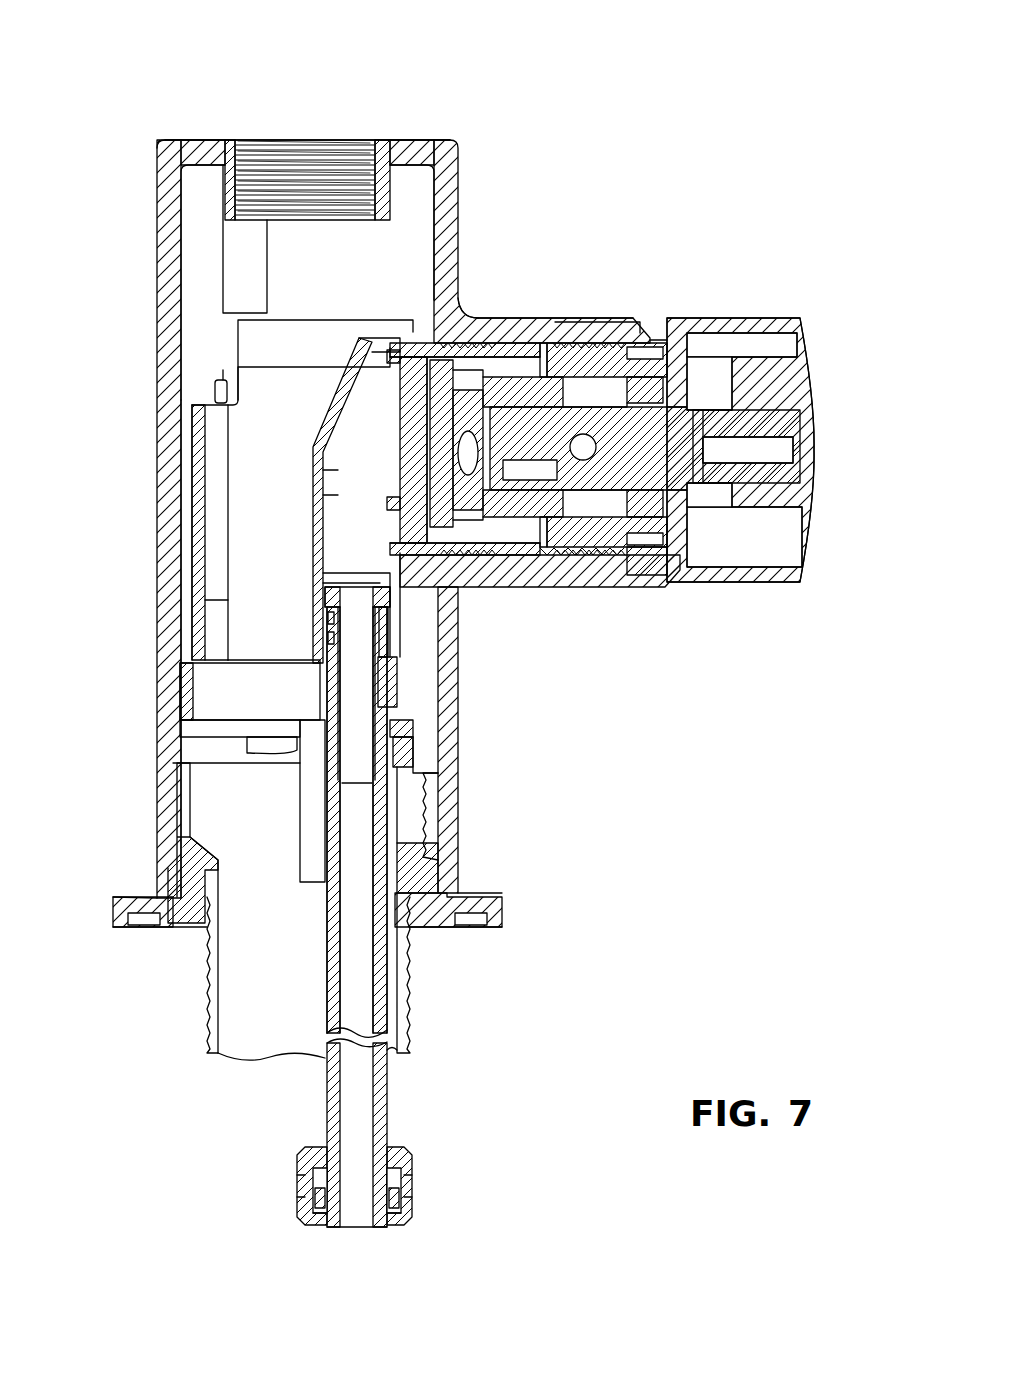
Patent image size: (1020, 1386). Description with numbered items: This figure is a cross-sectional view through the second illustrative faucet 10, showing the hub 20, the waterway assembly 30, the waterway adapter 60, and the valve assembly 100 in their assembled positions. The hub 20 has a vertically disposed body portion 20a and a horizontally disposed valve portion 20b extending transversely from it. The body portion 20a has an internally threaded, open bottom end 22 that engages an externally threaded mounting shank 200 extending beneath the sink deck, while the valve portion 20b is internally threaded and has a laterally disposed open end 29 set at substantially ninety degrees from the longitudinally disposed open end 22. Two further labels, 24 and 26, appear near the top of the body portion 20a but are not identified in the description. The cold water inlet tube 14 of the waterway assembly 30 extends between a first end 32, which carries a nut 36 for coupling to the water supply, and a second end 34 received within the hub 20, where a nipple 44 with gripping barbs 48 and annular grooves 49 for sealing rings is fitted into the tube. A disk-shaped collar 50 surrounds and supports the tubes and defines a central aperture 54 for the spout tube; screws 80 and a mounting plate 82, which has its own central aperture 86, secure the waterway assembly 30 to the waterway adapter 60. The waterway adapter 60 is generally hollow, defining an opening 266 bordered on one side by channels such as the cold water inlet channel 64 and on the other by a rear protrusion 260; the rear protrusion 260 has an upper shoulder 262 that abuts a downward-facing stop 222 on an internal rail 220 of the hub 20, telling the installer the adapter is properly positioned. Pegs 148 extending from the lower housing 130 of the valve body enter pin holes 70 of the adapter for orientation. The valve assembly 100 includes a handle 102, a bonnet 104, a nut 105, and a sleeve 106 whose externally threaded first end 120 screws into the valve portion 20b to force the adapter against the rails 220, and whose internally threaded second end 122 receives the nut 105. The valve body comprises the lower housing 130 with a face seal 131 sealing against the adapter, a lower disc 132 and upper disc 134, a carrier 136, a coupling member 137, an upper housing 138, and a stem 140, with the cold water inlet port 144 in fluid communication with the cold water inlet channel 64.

The faucet 10 is at (483, 70).
The cold water inlet tube 14 is at (295, 917).
The hub 20 is at (364, 533).
The body portion 20a is at (126, 563).
The valve portion 20b is at (555, 262).
The bottom end 22 is at (373, 944).
The inlet opening 24 is at (292, 218).
The threads 26 is at (307, 128).
The open end 29 is at (725, 517).
The waterway assembly 30 is at (492, 790).
The first end 32 is at (303, 1268).
The second end 34 is at (149, 563).
The nut 36 is at (419, 1186).
The nipple 44 is at (421, 683).
The barbs 48 is at (246, 886).
The annular grooves 49 is at (262, 681).
The collar 50 is at (480, 745).
The central aperture 54 is at (469, 691).
The waterway adapter 60 is at (213, 510).
The cold water inlet channel 64 is at (211, 492).
The pin holes 70 is at (321, 584).
The screws 80 is at (184, 754).
The mounting plate 82 is at (459, 833).
The central aperture 86 is at (191, 697).
The valve assembly 100 is at (684, 245).
The handle 102 is at (762, 394).
The bonnet 104 is at (688, 359).
The nut 105 is at (574, 392).
The sleeve 106 is at (596, 349).
The first end 120 is at (433, 201).
The second end 122 is at (607, 261).
The lower housing 130 is at (445, 391).
The face seal 131 is at (340, 388).
The lower disc 132 is at (465, 496).
The upper disc 134 is at (581, 607).
The carrier 136 is at (632, 596).
The coupling member 137 is at (695, 488).
The upper housing 138 is at (665, 380).
The stem 140 is at (798, 425).
The cold water inlet port 144 is at (193, 370).
The pegs 148 is at (336, 500).
The mounting shank 200 is at (237, 976).
The internal rails 220 is at (235, 285).
The downward-facing stop 222 is at (121, 532).
The rear protrusion 260 is at (136, 546).
The upper shoulder 262 is at (141, 398).
The opening 266 is at (150, 621).